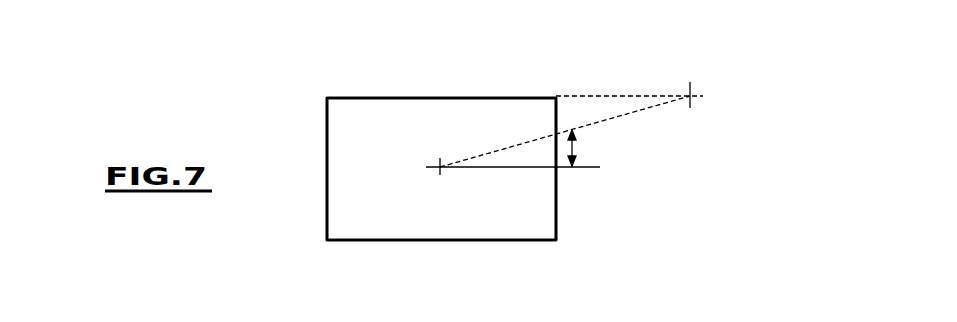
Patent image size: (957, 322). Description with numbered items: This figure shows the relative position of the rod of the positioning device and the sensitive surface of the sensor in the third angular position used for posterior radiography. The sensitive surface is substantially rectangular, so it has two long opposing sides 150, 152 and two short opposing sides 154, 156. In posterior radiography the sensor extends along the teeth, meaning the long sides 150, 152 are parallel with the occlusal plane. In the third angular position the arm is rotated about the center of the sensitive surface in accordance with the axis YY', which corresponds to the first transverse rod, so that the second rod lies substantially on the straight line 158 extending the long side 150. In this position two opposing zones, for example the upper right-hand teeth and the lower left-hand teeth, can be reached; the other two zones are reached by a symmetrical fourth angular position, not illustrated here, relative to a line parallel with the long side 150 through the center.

The long side 150 is at (440, 97).
The long side 152 is at (421, 242).
The short side 154 is at (558, 212).
The short side 156 is at (326, 186).
The straight line 158 is at (621, 95).